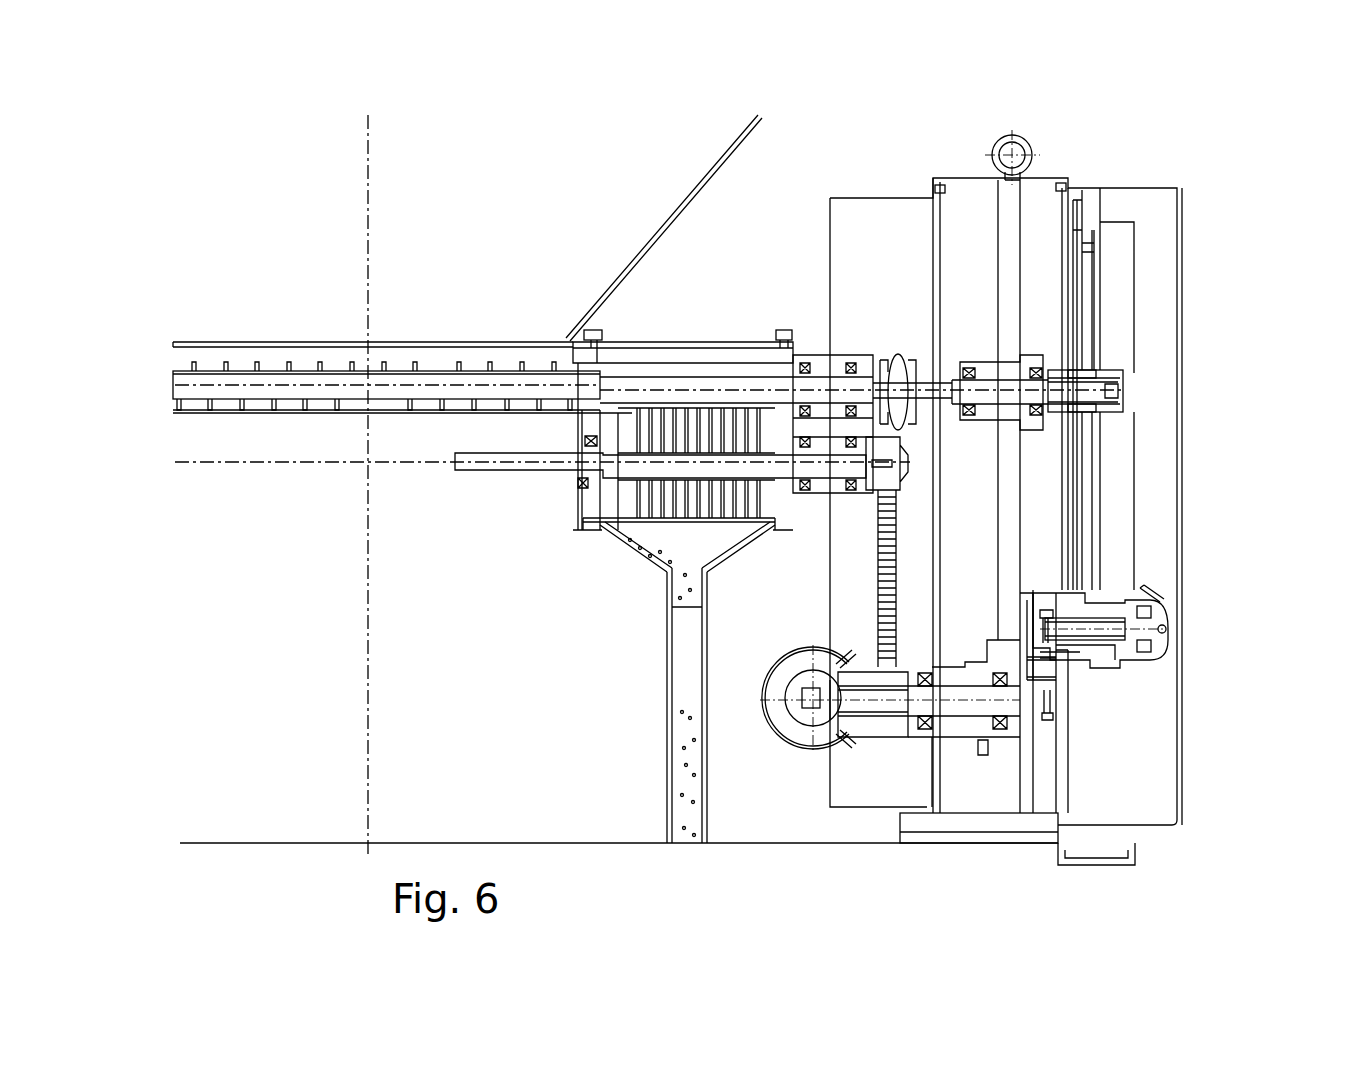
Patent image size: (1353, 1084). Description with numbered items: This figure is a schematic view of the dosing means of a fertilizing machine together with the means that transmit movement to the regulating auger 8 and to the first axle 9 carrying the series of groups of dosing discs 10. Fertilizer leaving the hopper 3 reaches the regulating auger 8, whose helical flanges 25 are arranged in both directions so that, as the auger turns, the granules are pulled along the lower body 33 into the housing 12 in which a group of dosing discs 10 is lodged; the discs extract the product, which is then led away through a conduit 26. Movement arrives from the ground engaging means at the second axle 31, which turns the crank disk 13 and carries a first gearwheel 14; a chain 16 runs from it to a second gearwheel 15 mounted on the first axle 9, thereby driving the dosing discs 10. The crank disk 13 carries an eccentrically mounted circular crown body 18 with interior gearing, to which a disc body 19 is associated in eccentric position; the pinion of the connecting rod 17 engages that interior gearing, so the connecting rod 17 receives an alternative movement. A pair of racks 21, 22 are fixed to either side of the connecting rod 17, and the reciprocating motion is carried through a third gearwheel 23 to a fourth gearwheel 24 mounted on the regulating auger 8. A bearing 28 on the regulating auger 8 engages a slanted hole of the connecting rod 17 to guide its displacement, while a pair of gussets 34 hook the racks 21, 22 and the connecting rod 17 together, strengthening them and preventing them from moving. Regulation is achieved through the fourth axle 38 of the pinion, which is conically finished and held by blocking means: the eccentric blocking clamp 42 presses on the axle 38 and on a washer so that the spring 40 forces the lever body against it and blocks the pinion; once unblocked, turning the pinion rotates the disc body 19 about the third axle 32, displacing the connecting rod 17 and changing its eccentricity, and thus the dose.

The hopper 3 is at (690, 198).
The regulating auger 8 is at (232, 371).
The first axle 9 is at (467, 470).
The dosing discs 10 is at (655, 498).
The housing 12 is at (635, 550).
The crank disk 13 is at (1048, 767).
The first gearwheel 14 is at (887, 723).
The second gearwheel 15 is at (888, 442).
The chain 16 is at (888, 590).
The connecting rod 17 is at (1083, 317).
The circular crown body 18 is at (1048, 612).
The disc body 19 is at (1060, 677).
The rack 21 is at (1077, 285).
The rack 22 is at (1093, 255).
The third gearwheel 23 is at (1060, 378).
The fourth gearwheel 24 is at (1103, 380).
The helical flanges 25 is at (313, 364).
The conduit 26 is at (670, 677).
The bearing 28 is at (1083, 408).
The second axle 31 is at (962, 705).
The third axle 32 is at (1042, 663).
The lower body 33 is at (210, 412).
The gussets 34 is at (1103, 188).
The fourth axle 38 is at (1090, 632).
The spring 40 is at (1143, 645).
The blocking clamp 42 is at (1153, 598).